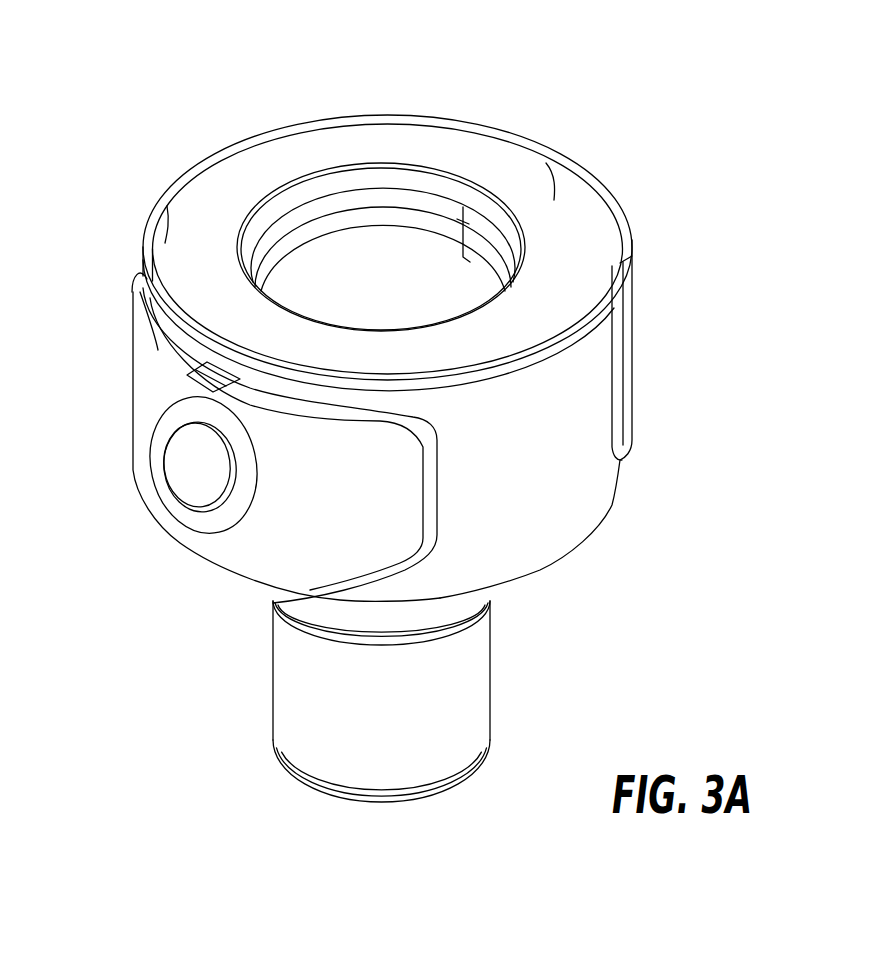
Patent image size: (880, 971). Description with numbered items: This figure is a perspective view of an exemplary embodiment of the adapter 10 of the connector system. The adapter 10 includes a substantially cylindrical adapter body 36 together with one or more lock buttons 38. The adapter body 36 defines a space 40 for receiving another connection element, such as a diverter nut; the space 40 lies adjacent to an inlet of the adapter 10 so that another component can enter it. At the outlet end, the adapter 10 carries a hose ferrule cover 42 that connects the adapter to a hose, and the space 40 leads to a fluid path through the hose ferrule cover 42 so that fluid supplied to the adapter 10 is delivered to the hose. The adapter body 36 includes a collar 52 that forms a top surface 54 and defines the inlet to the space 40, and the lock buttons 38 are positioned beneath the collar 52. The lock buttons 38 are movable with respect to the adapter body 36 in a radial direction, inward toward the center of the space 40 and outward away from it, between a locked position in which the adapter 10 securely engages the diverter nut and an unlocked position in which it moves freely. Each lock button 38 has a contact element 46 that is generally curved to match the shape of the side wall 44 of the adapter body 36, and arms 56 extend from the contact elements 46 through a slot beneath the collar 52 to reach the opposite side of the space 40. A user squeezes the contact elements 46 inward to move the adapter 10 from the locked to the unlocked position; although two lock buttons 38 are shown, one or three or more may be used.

The adapter 10 is at (152, 50).
The adapter body 36 is at (580, 505).
The lock buttons 38 is at (133, 457).
The space 40 is at (373, 247).
The hose ferrule cover 42 is at (470, 698).
The side wall 44 is at (550, 460).
The contact elements 46 is at (190, 538).
The collar 52 is at (538, 160).
The top surface 54 is at (165, 200).
The arms 56 is at (264, 220).